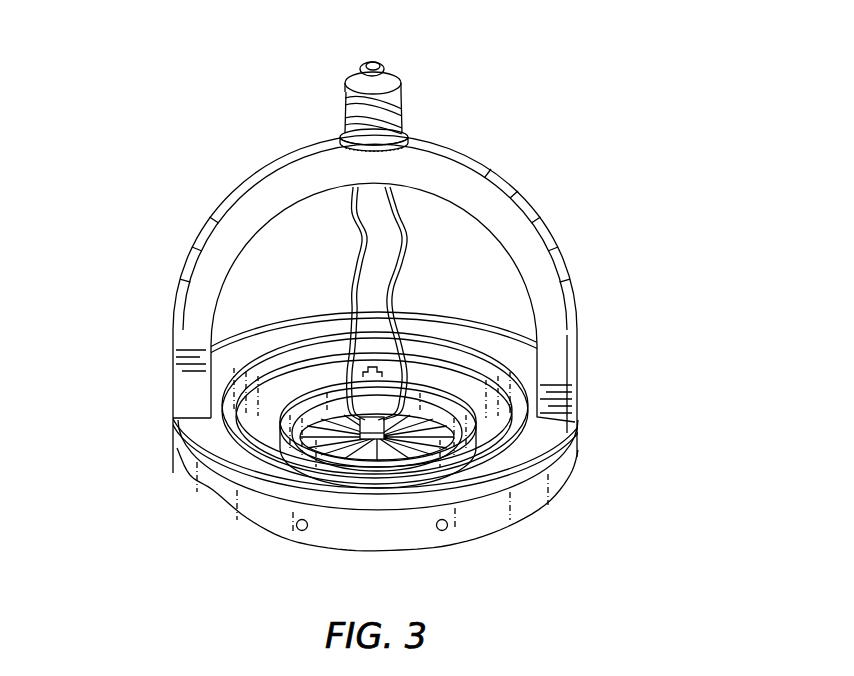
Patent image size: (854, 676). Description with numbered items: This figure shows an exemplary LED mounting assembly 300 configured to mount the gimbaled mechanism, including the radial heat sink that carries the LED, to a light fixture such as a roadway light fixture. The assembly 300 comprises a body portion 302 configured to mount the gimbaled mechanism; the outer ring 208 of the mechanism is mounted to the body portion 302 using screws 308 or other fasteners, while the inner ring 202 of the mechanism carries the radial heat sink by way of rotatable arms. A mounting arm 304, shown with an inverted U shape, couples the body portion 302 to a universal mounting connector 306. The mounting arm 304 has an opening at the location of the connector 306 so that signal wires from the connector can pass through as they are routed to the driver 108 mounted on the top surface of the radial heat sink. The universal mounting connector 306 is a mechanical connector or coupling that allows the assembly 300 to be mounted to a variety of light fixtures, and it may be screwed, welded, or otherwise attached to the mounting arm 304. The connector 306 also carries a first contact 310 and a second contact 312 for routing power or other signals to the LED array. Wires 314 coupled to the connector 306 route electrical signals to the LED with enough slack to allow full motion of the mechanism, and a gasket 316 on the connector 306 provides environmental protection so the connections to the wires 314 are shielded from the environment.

The LED mounting assembly 300 is at (632, 66).
The body portion 302 is at (233, 513).
The mounting arm 304 is at (207, 213).
The universal mounting connector 306 is at (343, 105).
The screws 308 is at (297, 531).
The first contact 310 is at (381, 63).
The second contact 312 is at (353, 72).
The wires 314 is at (353, 248).
The gasket 316 is at (407, 131).
The outer ring 208 is at (515, 433).
The inner ring 202 is at (478, 442).
The driver 108 is at (393, 488).